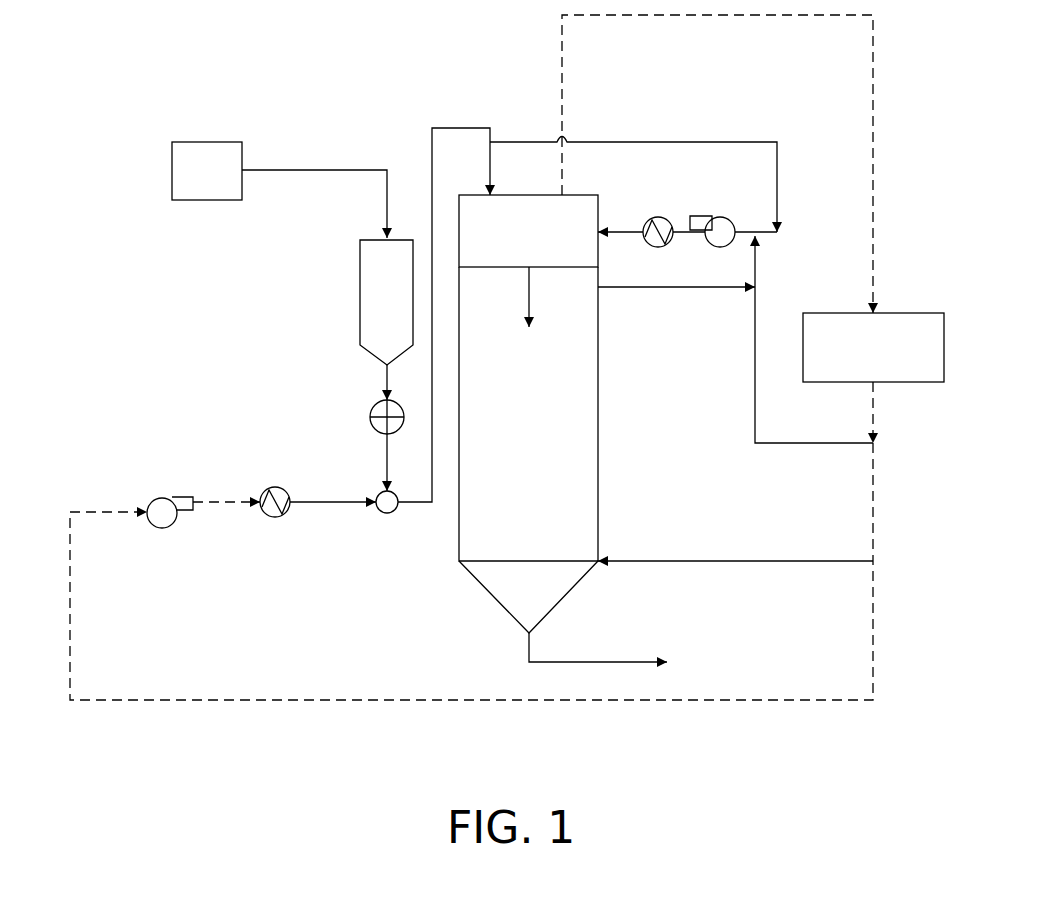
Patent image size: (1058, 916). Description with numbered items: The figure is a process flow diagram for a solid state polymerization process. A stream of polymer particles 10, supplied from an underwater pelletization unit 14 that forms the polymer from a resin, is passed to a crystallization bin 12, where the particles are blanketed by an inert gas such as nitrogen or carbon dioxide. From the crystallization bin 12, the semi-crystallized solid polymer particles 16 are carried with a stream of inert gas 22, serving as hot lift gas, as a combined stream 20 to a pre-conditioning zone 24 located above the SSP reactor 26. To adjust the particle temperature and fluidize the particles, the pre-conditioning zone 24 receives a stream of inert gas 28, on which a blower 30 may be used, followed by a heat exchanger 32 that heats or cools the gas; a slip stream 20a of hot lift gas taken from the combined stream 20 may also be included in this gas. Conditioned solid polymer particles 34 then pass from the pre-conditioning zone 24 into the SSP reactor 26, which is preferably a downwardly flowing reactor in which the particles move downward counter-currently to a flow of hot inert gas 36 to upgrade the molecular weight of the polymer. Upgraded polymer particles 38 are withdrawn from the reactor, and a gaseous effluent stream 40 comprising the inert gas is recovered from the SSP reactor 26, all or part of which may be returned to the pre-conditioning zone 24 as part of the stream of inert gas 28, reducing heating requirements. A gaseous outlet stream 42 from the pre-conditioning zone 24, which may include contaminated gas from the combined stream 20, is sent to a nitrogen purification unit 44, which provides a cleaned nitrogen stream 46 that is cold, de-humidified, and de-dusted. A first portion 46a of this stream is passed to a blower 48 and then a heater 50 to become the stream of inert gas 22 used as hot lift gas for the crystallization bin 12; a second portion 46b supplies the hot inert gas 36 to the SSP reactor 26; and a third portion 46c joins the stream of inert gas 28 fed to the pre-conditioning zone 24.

The stream of polymer particles 10 is at (313, 168).
The crystallization bin 12 is at (371, 239).
The underwater pelletization unit 14 is at (181, 140).
The semi-crystallized solid polymer particles 16 is at (385, 458).
The combined stream 20 is at (451, 127).
The slip stream 20a is at (653, 141).
The stream of inert gas 22 is at (343, 503).
The pre-conditioning zone 24 is at (583, 195).
The SSP reactor 26 is at (598, 397).
The stream of inert gas 28 is at (632, 236).
The blower 30 is at (722, 216).
The heat exchanger 32 is at (664, 217).
The conditioned solid polymer particles 34 is at (532, 290).
The hot inert gas 36 is at (640, 561).
The upgraded polymer particles 38 is at (604, 662).
The gaseous effluent stream 40 is at (668, 287).
The gaseous outlet stream 42 is at (560, 82).
The nitrogen purification unit 44 is at (925, 313).
The cleaned nitrogen stream 46 is at (874, 408).
The first portion of the cleaned nitrogen stream 46a is at (874, 610).
The second portion of the cleaned nitrogen stream 46b is at (812, 561).
The third portion of the cleaned nitrogen stream 46c is at (755, 443).
The blower 48 is at (160, 497).
The heater 50 is at (272, 517).